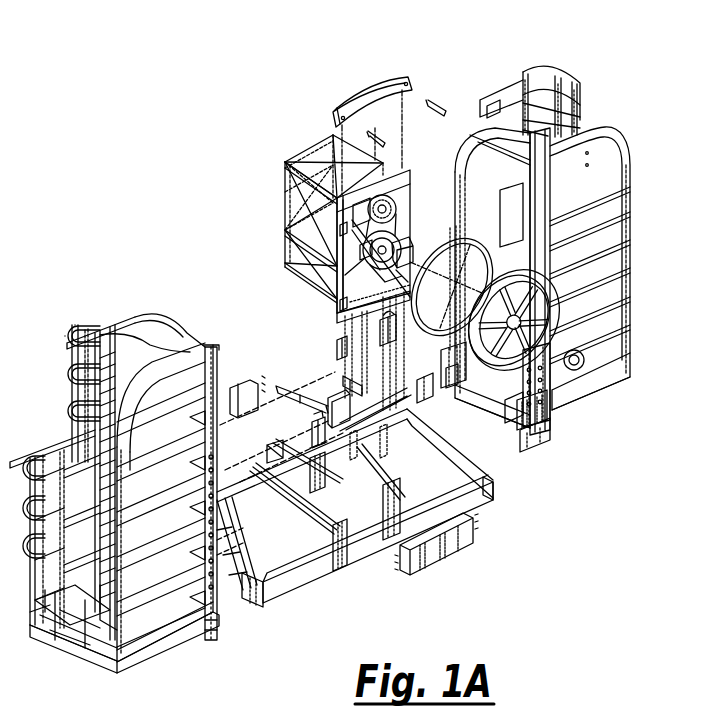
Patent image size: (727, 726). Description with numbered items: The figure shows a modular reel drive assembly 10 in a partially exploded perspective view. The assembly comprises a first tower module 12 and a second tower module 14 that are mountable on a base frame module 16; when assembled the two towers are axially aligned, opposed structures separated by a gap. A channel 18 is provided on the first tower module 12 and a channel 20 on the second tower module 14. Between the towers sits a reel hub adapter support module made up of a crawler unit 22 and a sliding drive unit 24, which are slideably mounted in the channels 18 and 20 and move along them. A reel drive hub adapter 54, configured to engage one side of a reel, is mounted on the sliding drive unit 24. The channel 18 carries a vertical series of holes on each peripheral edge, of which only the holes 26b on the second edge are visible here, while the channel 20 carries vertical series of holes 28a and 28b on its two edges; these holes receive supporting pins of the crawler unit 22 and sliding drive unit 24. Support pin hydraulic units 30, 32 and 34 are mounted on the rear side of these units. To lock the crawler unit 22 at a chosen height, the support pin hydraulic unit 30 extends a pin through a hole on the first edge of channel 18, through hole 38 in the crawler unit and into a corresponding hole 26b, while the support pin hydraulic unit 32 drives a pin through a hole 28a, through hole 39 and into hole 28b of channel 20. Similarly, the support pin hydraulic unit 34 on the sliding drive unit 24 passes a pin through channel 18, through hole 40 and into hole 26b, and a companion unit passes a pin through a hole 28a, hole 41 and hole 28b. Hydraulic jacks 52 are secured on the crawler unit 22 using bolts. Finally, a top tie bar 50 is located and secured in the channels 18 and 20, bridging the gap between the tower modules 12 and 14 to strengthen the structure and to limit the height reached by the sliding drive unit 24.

The modular reel drive assembly 10 is at (626, 90).
The first tower module 12 is at (176, 624).
The second tower module 14 is at (597, 392).
The base frame module 16 is at (466, 484).
The channel 18 is at (213, 345).
The channel 20 is at (598, 164).
The crawler unit 22 is at (398, 380).
The sliding drive unit 24 is at (330, 235).
The holes 26b is at (219, 574).
The holes 28a is at (521, 380).
The holes 28b is at (547, 375).
The support pin hydraulic unit 30 is at (299, 384).
The support pin hydraulic unit 32 is at (349, 379).
The support pin hydraulic unit 34 is at (333, 288).
The hole 38 is at (332, 423).
The hole 39 is at (408, 398).
The hole 40 is at (367, 307).
The hole 41 is at (408, 258).
The top tie bar 50 is at (385, 88).
The hydraulic jacks 52 is at (343, 352).
The reel drive hub adapter 54 is at (583, 320).